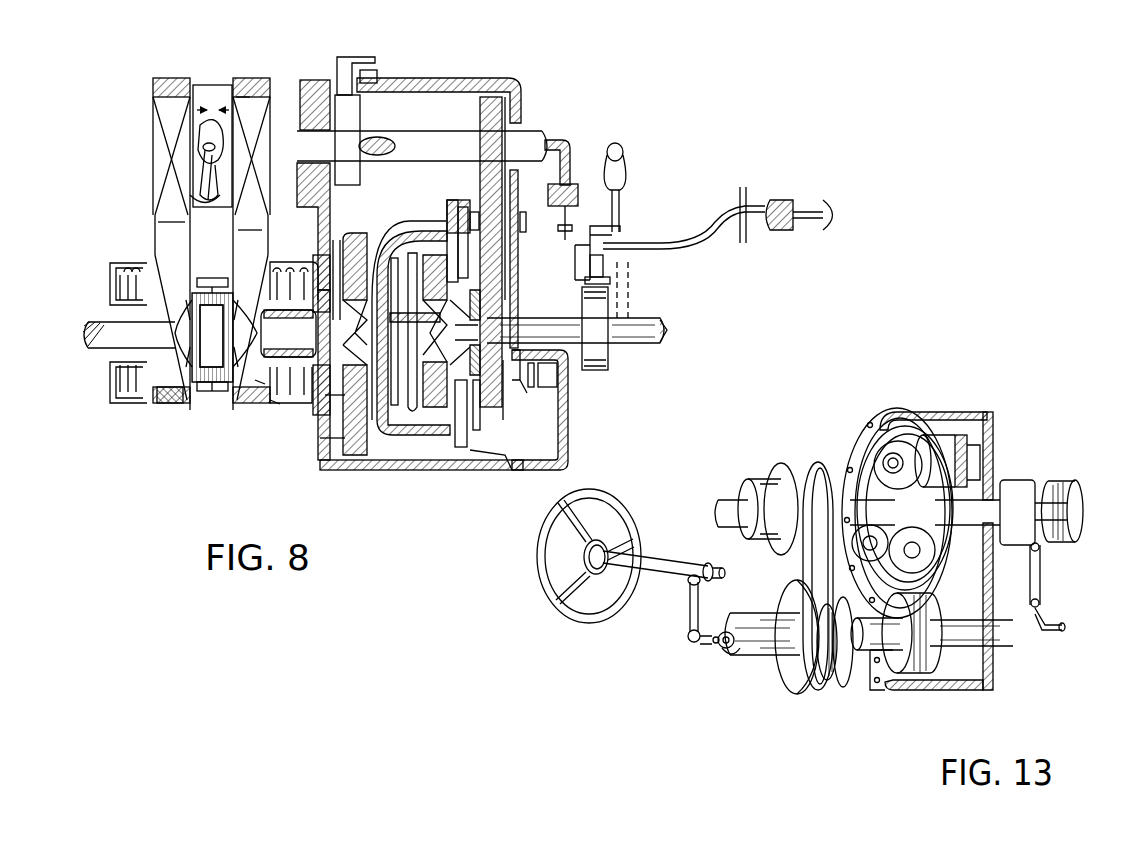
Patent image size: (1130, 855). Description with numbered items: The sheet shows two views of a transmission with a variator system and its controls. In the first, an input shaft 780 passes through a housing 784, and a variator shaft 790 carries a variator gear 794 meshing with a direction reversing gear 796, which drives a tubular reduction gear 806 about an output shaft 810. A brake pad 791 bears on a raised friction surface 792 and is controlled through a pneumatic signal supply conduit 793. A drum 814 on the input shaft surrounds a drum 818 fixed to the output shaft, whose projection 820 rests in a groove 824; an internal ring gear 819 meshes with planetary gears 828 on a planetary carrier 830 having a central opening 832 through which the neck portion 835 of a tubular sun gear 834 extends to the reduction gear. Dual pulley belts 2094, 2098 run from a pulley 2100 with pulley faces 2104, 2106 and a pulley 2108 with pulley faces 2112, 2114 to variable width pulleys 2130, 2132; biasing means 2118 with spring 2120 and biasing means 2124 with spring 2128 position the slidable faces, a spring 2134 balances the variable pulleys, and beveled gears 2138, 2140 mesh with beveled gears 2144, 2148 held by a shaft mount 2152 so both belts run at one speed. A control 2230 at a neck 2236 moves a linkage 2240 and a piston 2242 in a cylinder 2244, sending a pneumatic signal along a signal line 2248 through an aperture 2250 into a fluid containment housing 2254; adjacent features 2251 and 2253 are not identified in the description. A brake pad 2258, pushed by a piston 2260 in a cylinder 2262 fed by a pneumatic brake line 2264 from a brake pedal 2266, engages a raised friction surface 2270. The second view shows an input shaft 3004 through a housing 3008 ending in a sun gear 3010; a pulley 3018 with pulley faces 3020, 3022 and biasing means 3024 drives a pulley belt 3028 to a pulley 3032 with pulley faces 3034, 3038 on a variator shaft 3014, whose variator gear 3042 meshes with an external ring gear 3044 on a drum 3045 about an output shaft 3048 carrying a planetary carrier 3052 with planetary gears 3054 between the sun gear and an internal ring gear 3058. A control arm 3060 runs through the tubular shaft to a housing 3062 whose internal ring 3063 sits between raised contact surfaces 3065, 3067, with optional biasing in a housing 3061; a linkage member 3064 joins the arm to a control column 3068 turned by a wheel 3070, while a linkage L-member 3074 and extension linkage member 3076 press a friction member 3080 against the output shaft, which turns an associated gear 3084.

In FIG. 8, the input shaft 780 is at (86, 333).
In FIG. 8, the housing 784 is at (472, 56).
In FIG. 8, the variator shaft 790 is at (556, 145).
In FIG. 8, the brake pad 791 is at (345, 85).
In FIG. 8, the raised friction surface 792 is at (422, 140).
In FIG. 8, the pneumatic signal supply conduit 793 is at (375, 70).
In FIG. 8, the variator gear 794 is at (502, 98).
In FIG. 8, the direction reversing gear 796 is at (483, 212).
In FIG. 8, the tubular reduction gear 806 is at (522, 398).
In FIG. 8, the output shaft 810 is at (667, 328).
In FIG. 8, the drum 814 is at (400, 415).
In FIG. 8, the drum 818 is at (392, 426).
In FIG. 8, the internal ring gear 819 is at (440, 398).
In FIG. 8, the projection 820 is at (322, 398).
In FIG. 8, the groove 824 is at (320, 438).
In FIG. 8, the planetary gears 828 is at (472, 412).
In FIG. 8, the planetary carrier 830 is at (507, 447).
In FIG. 8, the central opening 832 is at (507, 470).
In FIG. 8, the tubular sun gear 834 is at (503, 400).
In FIG. 8, the neck portion 835 is at (527, 393).
In FIG. 8, the pulley belt 2094 is at (173, 222).
In FIG. 8, the pulley belt 2098 is at (250, 230).
In FIG. 8, the pulley 2100 is at (184, 410).
In FIG. 8, the pulley face 2104 is at (158, 390).
In FIG. 8, the pulley face 2106 is at (192, 404).
In FIG. 8, the pulley 2108 is at (257, 383).
In FIG. 8, the pulley face 2112 is at (278, 403).
In FIG. 8, the pulley face 2114 is at (228, 386).
In FIG. 8, the biasing means 2118 is at (112, 387).
In FIG. 8, the spring 2120 is at (128, 372).
In FIG. 8, the biasing means 2124 is at (327, 257).
In FIG. 8, the spring 2128 is at (278, 282).
In FIG. 8, the variable width pulley 2130 is at (150, 88).
In FIG. 8, the variable width pulley 2132 is at (275, 92).
In FIG. 8, the spring 2134 is at (210, 140).
In FIG. 8, the beveled gear 2138 is at (143, 300).
In FIG. 8, the beveled gear 2140 is at (252, 376).
In FIG. 8, the beveled gear 2144 is at (217, 388).
In FIG. 8, the beveled gear 2148 is at (178, 270).
In FIG. 8, the shaft mount 2152 is at (210, 393).
In FIG. 8, the control 2230 is at (619, 203).
In FIG. 8, the neck 2236 is at (558, 375).
In FIG. 8, the linkage 2240 is at (620, 225).
In FIG. 8, the piston 2242 is at (570, 208).
In FIG. 8, the cylinder 2244 is at (567, 202).
In FIG. 8, the signal line 2248 is at (567, 155).
In FIG. 8, the aperture 2250 is at (197, 147).
In FIG. 8, the flyweight arm 2251 is at (180, 165).
In FIG. 8, the flyweight pivot 2253 is at (243, 173).
In FIG. 8, the fluid containment housing 2254 is at (243, 98).
In FIG. 8, the brake pad 2258 is at (603, 278).
In FIG. 8, the piston 2260 is at (622, 272).
In FIG. 8, the cylinder 2262 is at (622, 250).
In FIG. 8, the pneumatic brake line 2264 is at (712, 214).
In FIG. 8, the brake pedal 2266 is at (765, 235).
In FIG. 8, the raised friction surface 2270 is at (600, 311).
In FIG. 13, the input shaft 3004 is at (735, 505).
In FIG. 13, the housing 3008 is at (907, 410).
In FIG. 13, the sun gear 3010 is at (858, 466).
In FIG. 13, the variator shaft 3014 is at (868, 652).
In FIG. 13, the pulley 3018 is at (778, 452).
In FIG. 13, the pulley face 3020 is at (774, 472).
In FIG. 13, the pulley face 3022 is at (801, 459).
In FIG. 13, the biasing means 3024 is at (752, 488).
In FIG. 13, the pulley belt 3028 is at (775, 565).
In FIG. 13, the pulley 3032 is at (777, 667).
In FIG. 13, the pulley face 3034 is at (798, 675).
In FIG. 13, the pulley face 3038 is at (828, 682).
In FIG. 13, the variator gear 3042 is at (930, 660).
In FIG. 13, the external ring gear 3044 is at (940, 456).
In FIG. 13, the drum 3045 is at (960, 452).
In FIG. 13, the output shaft 3048 is at (1033, 503).
In FIG. 13, the planetary carrier 3052 is at (933, 485).
In FIG. 13, the planetary gears 3054 is at (943, 440).
In FIG. 13, the internal ring gear 3058 is at (890, 480).
In FIG. 13, the control arm 3060 is at (684, 642).
In FIG. 13, the housing 3061 is at (855, 688).
In FIG. 13, the housing 3062 is at (713, 648).
In FIG. 13, the internal ring 3063 is at (722, 652).
In FIG. 13, the linkage member 3064 is at (688, 598).
In FIG. 13, the raised contact surface 3065 is at (704, 602).
In FIG. 13, the raised contact surface 3067 is at (712, 638).
In FIG. 13, the control column 3068 is at (652, 565).
In FIG. 13, the wheel 3070 is at (540, 578).
In FIG. 13, the linkage L-member 3074 is at (1052, 624).
In FIG. 13, the extension linkage member 3076 is at (1040, 573).
In FIG. 13, the friction member 3080 is at (1013, 483).
In FIG. 13, the gear 3084 is at (1055, 517).